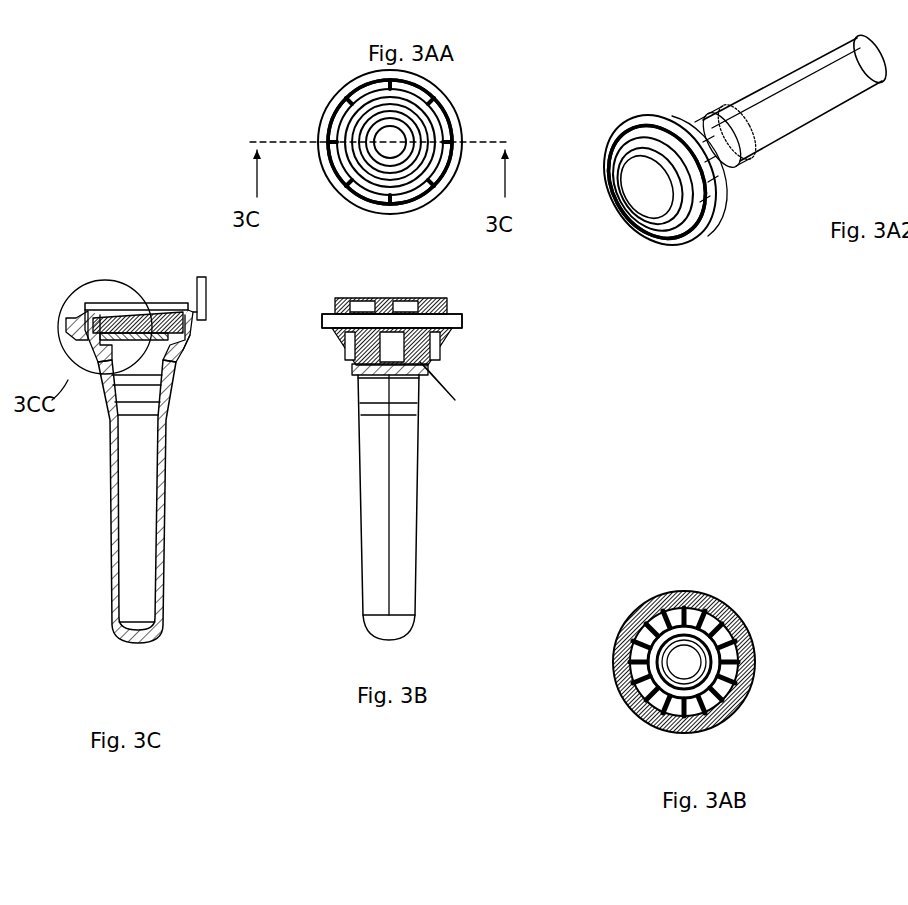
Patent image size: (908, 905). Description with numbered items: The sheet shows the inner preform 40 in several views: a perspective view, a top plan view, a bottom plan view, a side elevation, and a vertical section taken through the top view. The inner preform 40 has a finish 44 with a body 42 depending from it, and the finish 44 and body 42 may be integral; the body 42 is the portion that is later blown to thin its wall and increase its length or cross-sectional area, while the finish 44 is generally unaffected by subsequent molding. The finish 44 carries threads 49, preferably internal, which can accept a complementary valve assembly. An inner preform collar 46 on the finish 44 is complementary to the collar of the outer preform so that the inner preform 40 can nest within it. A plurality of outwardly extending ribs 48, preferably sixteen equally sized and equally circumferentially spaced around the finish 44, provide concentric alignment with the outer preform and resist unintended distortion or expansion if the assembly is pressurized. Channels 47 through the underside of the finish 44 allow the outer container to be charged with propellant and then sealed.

In FIG. 3AA, the inner preform 40 is at (387, 238).
In FIG. 3A2, the inner preform 40 is at (733, 171).
In FIG. 3C, the inner preform 40 is at (178, 437).
In FIG. 3B, the inner preform 40 is at (410, 461).
In FIG. 3AB, the inner preform 40 is at (673, 626).
In FIG. 3A2, the body 42 is at (830, 102).
In FIG. 3C, the body 42 is at (215, 640).
In FIG. 3B, the body 42 is at (372, 537).
In FIG. 3A2, the finish 44 is at (622, 127).
In FIG. 3C, the finish 44 is at (238, 305).
In FIG. 3B, the finish 44 is at (492, 300).
In FIG. 3AA, the inner preform collar 46 is at (334, 112).
In FIG. 3A2, the inner preform collar 46 is at (652, 124).
In FIG. 3C, the inner preform collar 46 is at (222, 281).
In FIG. 3B, the inner preform collar 46 is at (322, 318).
In FIG. 3A2, the channels 47 is at (720, 190).
In FIG. 3C, the channels 47 is at (183, 382).
In FIG. 3B, the channels 47 is at (330, 370).
In FIG. 3AB, the channels 47 is at (614, 684).
In FIG. 3A2, the ribs 48 is at (727, 187).
In FIG. 3C, the ribs 48 is at (204, 341).
In FIG. 3B, the ribs 48 is at (457, 390).
In FIG. 3AB, the ribs 48 is at (678, 598).
In FIG. 3A2, the threads 49 is at (633, 232).
In FIG. 3C, the threads 49 is at (152, 304).
In FIG. 3AB, the threads 49 is at (684, 662).